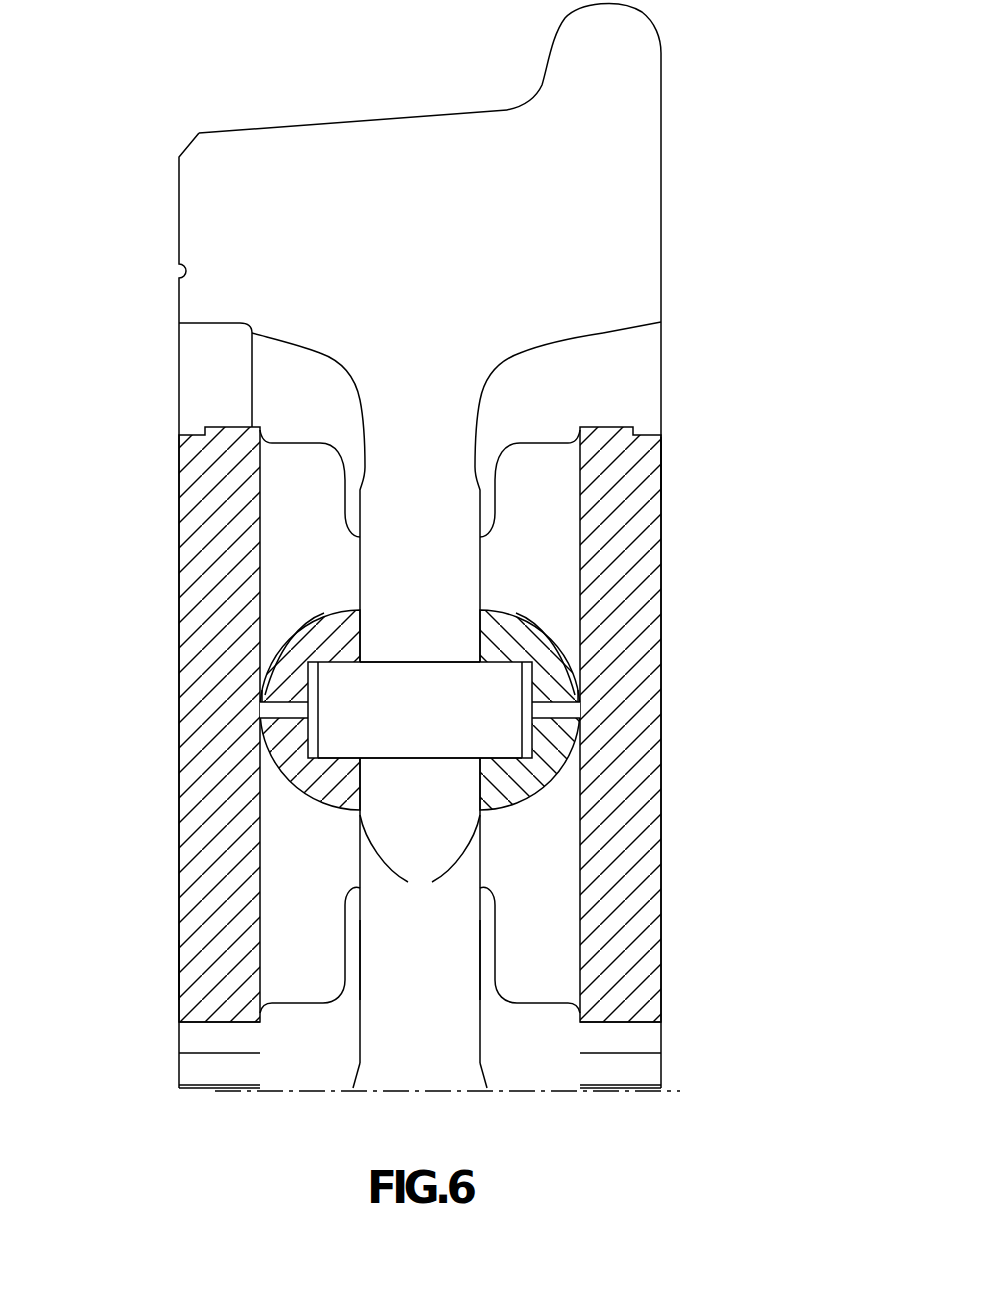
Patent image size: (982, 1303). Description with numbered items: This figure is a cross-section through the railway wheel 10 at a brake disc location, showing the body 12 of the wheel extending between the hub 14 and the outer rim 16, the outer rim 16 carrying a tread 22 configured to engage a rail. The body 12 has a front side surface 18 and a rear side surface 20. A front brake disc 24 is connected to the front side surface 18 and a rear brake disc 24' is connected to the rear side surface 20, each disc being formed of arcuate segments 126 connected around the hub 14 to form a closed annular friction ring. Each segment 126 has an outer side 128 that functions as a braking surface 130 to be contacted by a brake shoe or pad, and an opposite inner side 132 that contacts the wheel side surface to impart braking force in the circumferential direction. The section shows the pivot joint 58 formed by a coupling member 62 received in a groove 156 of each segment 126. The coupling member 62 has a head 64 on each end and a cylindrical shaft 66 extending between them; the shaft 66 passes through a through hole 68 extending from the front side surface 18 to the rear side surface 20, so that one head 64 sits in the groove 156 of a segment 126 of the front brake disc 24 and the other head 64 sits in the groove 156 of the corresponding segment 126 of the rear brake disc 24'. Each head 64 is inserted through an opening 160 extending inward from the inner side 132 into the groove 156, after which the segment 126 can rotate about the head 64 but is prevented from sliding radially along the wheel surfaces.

The railway wheel 10 is at (618, 218).
The body 12 is at (424, 983).
The hub 14 is at (458, 1073).
The outer rim 16 is at (342, 170).
The front side surface 18 is at (480, 503).
The rear side surface 20 is at (345, 473).
The tread 22 is at (390, 1090).
The front brake disc 24 is at (722, 440).
The rear brake disc 24' is at (124, 981).
The pivot joint 58 is at (276, 784).
The coupling member 62 is at (377, 655).
The head 64 is at (284, 672).
The cylindrical shaft 66 is at (412, 697).
The through hole 68 is at (433, 758).
The segment 126 is at (205, 557).
The outer side 128 is at (179, 935).
The braking surface 130 is at (662, 890).
The inner side 132 is at (260, 830).
The groove 156 is at (323, 613).
The opening 160 is at (420, 864).